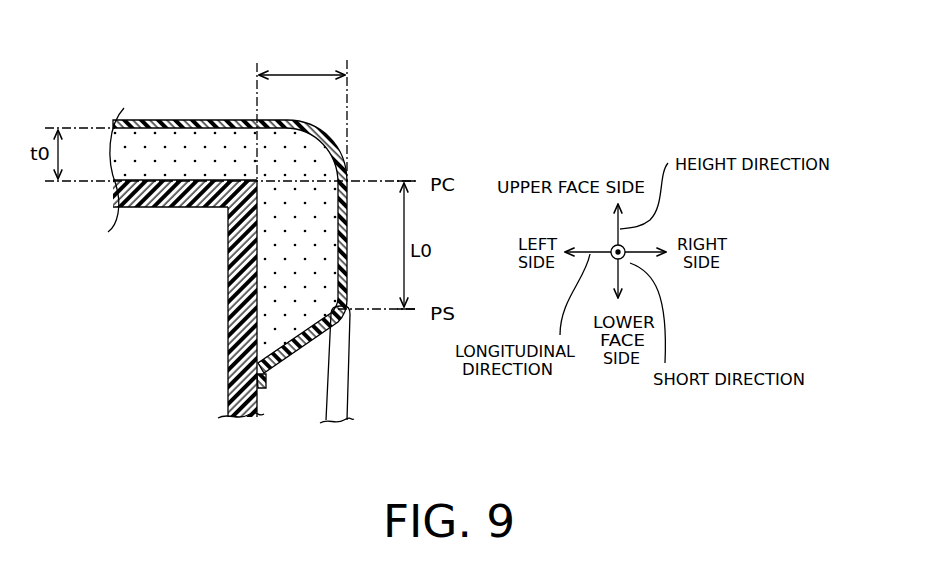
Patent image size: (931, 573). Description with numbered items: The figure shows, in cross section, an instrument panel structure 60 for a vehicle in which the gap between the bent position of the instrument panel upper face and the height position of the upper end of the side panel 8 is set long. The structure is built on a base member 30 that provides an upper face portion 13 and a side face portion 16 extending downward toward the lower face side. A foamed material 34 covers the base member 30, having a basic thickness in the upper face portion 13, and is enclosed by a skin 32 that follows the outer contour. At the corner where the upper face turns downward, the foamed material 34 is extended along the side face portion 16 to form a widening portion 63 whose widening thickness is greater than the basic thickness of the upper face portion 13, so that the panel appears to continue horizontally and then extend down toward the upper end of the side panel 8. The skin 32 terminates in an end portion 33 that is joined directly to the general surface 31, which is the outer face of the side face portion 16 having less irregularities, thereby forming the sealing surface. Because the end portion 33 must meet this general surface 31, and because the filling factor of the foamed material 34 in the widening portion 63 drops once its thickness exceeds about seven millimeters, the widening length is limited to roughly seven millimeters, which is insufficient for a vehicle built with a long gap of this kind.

The side panel 8 is at (344, 382).
The upper face portion 13 is at (157, 200).
The side face portion 16 is at (230, 325).
The base member 30 is at (204, 312).
The general surface 31 is at (264, 408).
The skin 32 is at (199, 120).
The end portion 33 is at (268, 379).
The foamed material 34 is at (167, 150).
The instrument panel structure 60 is at (309, 237).
The widening portion 63 is at (364, 42).